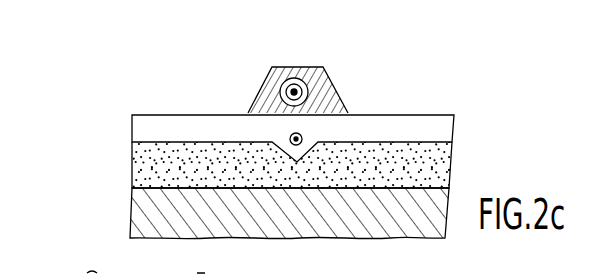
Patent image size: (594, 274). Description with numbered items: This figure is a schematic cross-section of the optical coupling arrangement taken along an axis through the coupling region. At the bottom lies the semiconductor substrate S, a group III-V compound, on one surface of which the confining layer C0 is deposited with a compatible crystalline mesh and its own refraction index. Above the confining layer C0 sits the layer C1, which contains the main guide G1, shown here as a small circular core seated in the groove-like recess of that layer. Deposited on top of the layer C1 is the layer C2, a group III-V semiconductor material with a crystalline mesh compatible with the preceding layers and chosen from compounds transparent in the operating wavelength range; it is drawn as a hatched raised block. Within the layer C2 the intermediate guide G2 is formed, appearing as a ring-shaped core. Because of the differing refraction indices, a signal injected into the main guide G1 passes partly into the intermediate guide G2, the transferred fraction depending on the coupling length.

The confining layer C0 is at (142, 158).
The layer C1 is at (132, 126).
The layer C2 is at (269, 72).
The intermediate guide G2 is at (311, 79).
The main guide G1 is at (319, 129).
The semiconductor substrate S is at (443, 212).